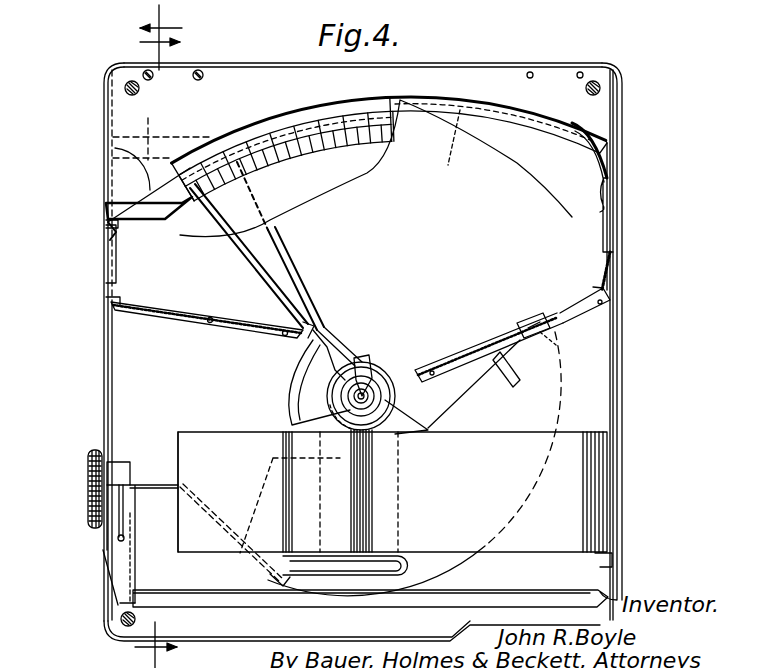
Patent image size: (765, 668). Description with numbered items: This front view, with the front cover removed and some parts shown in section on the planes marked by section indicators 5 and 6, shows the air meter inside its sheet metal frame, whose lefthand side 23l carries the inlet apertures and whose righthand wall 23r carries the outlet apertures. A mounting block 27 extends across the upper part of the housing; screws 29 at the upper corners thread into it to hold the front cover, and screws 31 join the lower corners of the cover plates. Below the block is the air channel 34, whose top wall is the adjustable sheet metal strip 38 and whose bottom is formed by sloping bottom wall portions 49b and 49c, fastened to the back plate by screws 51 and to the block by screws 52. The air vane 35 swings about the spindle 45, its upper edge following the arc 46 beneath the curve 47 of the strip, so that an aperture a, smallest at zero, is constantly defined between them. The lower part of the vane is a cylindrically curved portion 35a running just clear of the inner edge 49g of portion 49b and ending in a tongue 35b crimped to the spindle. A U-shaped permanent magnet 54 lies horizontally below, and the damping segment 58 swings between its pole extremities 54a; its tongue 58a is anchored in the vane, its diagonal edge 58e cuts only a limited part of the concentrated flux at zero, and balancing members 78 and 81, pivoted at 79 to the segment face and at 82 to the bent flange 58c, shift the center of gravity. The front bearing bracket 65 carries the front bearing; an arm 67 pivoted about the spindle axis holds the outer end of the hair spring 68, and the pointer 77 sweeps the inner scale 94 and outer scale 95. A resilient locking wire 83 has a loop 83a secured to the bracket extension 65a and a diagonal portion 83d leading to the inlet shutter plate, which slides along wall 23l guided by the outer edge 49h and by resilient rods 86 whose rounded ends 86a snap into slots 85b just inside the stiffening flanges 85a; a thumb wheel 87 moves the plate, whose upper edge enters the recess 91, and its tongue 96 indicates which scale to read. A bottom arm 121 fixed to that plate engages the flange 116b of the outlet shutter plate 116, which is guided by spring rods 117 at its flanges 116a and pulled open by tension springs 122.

The section line 5- 5 is at (161, 36).
The section line 6- 6 is at (157, 353).
The lefthand vertical side 23l is at (104, 166).
The righthand wall 23r is at (623, 163).
The block 27 is at (448, 82).
The screws 29 is at (644, 92).
The screws 31 is at (122, 622).
The air channel 34 is at (376, 168).
The air vane 35 is at (310, 280).
The cylindrically curved portion 35a is at (288, 378).
The tongue portion 35b is at (296, 405).
The adjustable member 38 is at (490, 82).
The spindle 45 is at (378, 382).
The arc 46 is at (434, 143).
The curvature 47 is at (524, 120).
The bottom wall portion 49b is at (166, 302).
The bottom wall portion 49c is at (448, 348).
The inner edge 49g is at (300, 336).
The outer edge 49h is at (108, 308).
The screws 51 is at (205, 322).
The screws 52 is at (578, 79).
The U-shaped permanent magnet 54 is at (478, 446).
The pole extremities 54a is at (215, 437).
The damping segment 58 is at (556, 408).
The tongue portion 58a is at (436, 391).
The flange 58c is at (556, 345).
The diagonal edge 58e is at (263, 480).
The front bearing bracket 65 is at (397, 431).
The extension portion 65a is at (400, 496).
The arm 67 is at (357, 356).
The hair spring 68 is at (335, 389).
The pointer 77 is at (240, 258).
The balancing member 78 is at (474, 384).
The pivot 79 is at (508, 350).
The balancing device 81 is at (540, 322).
The pivot connection 82 is at (520, 326).
The resilient wire 83 is at (310, 592).
The U-shaped resilient loop 83a is at (420, 560).
The diagonal wire portion 83d is at (160, 490).
The stiffening flanges 85a is at (110, 262).
The slots 85b is at (104, 222).
The resilient rods 86 is at (130, 178).
The rounded lower ends 86a is at (118, 230).
The thumb wheel 87 is at (88, 456).
The recess 91 is at (106, 132).
The inner scale 94 is at (322, 132).
The outer scale 95 is at (265, 118).
The tongue 96 is at (106, 228).
The shutter plate 116 is at (613, 278).
The marginal flanges 116a is at (602, 240).
The flange 116b is at (618, 556).
The spring rods 117 is at (586, 156).
The arm 121 is at (420, 592).
The tension springs 122 is at (600, 266).
The aperture a is at (478, 108).